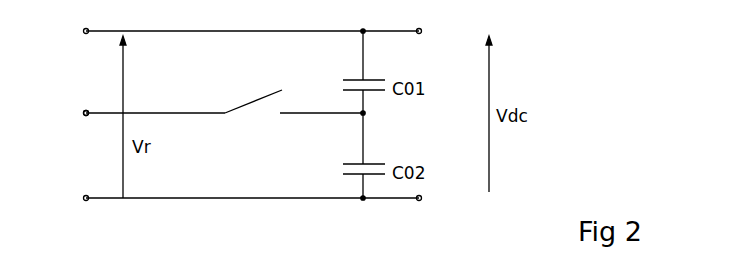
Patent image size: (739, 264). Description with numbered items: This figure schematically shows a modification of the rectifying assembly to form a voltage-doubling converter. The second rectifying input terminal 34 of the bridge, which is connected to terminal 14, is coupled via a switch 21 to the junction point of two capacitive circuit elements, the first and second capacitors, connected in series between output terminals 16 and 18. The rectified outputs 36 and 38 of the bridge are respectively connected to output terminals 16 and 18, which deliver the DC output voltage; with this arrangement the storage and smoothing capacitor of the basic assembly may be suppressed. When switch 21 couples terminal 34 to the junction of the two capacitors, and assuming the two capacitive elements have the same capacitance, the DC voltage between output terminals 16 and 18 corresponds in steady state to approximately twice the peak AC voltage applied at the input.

The terminal 14 is at (57, 113).
The second rectifying input terminal 34 is at (86, 113).
The rectified output 36 is at (71, 31).
The rectified output 38 is at (71, 198).
The output terminal 16 is at (422, 30).
The output terminal 18 is at (422, 198).
The switch 21 is at (252, 100).